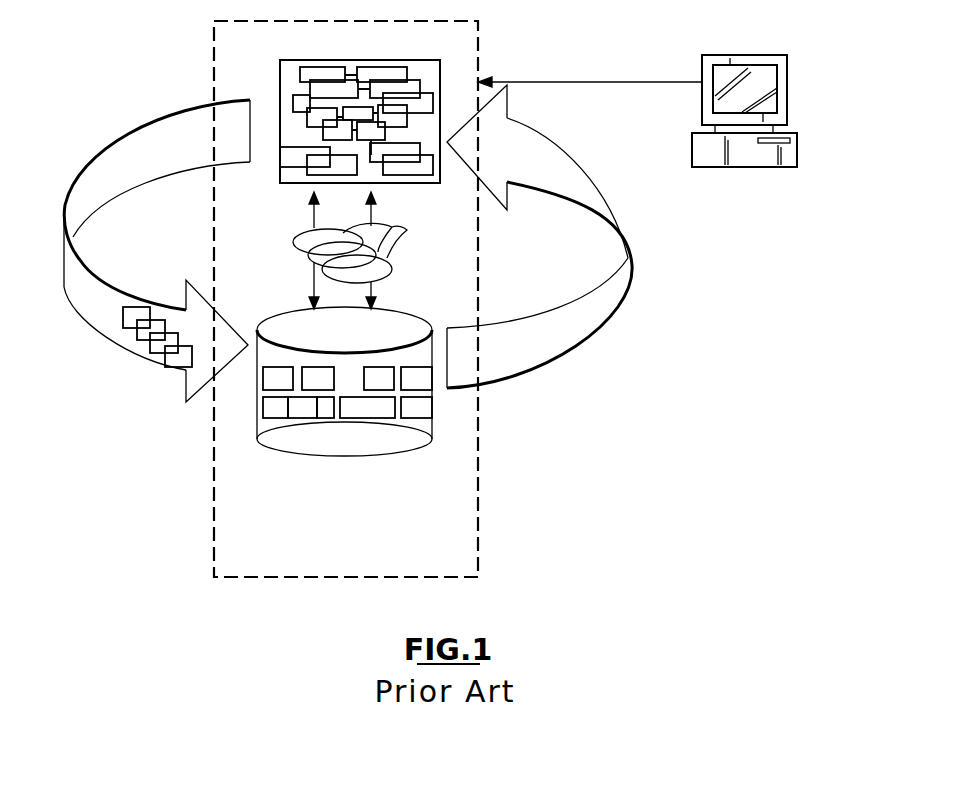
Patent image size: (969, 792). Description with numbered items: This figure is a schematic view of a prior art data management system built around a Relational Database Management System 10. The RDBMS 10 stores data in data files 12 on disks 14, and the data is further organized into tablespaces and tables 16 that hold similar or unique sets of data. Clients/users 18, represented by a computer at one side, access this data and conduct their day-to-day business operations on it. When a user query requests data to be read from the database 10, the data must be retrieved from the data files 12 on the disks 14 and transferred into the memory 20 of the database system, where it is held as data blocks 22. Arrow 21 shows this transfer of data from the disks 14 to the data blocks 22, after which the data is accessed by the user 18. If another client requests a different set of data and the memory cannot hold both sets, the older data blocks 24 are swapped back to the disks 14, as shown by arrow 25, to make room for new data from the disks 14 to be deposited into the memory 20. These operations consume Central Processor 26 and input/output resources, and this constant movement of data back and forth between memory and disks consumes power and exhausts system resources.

The Relational Database Management System 10 is at (636, 398).
The data files 12 is at (432, 408).
The disks 14 is at (365, 409).
The tables 16 is at (272, 381).
The clients/users 18 is at (768, 167).
The memory 20 is at (350, 105).
The arrow 21 is at (625, 231).
The data blocks 22 is at (298, 74).
The older data blocks 24 is at (142, 357).
The arrow 25 is at (98, 162).
The Central Processor 26 is at (395, 232).